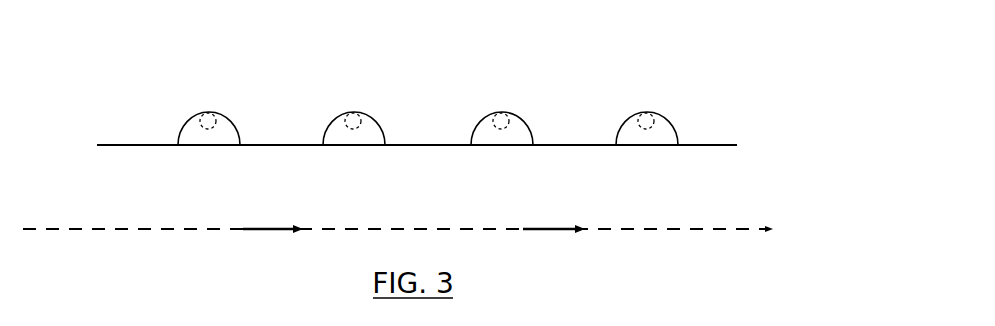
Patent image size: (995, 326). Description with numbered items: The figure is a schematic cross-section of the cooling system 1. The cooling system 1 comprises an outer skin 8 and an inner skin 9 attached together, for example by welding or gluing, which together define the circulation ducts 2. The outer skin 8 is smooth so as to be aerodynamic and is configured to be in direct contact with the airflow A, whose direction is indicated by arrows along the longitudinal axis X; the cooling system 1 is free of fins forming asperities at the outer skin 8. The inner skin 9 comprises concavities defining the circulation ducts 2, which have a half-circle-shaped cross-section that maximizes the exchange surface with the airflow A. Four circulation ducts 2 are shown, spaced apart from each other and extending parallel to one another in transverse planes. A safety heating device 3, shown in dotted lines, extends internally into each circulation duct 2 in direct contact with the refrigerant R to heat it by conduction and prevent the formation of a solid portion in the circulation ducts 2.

The cooling system 1 is at (68, 69).
The circulation ducts 2 is at (239, 120).
The safety heating device 3 is at (207, 108).
The outer skin 8 is at (123, 147).
The inner skin 9 is at (138, 145).